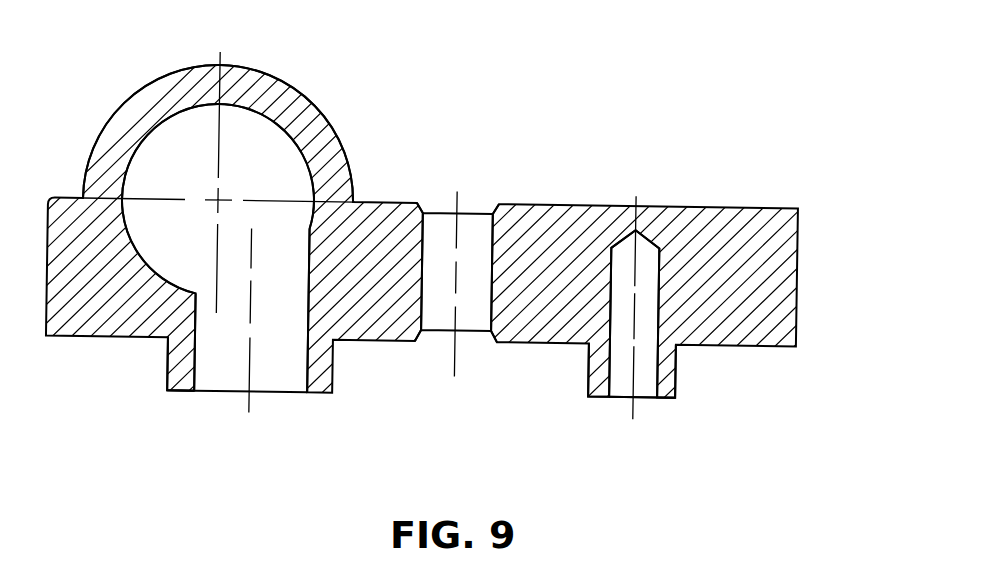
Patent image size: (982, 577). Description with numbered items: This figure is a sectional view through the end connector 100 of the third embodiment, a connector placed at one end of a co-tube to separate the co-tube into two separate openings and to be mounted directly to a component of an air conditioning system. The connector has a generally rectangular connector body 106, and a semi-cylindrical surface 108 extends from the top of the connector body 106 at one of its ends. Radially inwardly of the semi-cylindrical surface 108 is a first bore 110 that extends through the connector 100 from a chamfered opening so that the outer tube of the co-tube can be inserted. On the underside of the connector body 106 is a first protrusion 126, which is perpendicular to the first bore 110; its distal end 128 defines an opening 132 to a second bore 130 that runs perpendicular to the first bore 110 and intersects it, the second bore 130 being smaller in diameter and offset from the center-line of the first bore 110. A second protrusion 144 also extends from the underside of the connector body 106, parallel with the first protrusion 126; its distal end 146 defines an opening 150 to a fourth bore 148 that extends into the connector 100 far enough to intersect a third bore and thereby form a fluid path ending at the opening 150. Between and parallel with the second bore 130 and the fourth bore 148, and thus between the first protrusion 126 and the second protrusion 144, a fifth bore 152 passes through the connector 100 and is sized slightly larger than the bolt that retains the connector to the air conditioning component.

The end connector 100 is at (801, 177).
The connector body 106 is at (799, 249).
The semi-cylindrical surface 108 is at (262, 70).
The first bore 110 is at (253, 157).
The first protrusion 126 is at (170, 362).
The distal end 128 is at (178, 392).
The second bore 130 is at (275, 349).
The opening 132 is at (276, 393).
The second protrusion 144 is at (678, 369).
The distal end 146 is at (668, 398).
The fourth bore 148 is at (622, 357).
The opening 150 is at (622, 398).
The fifth bore 152 is at (467, 232).